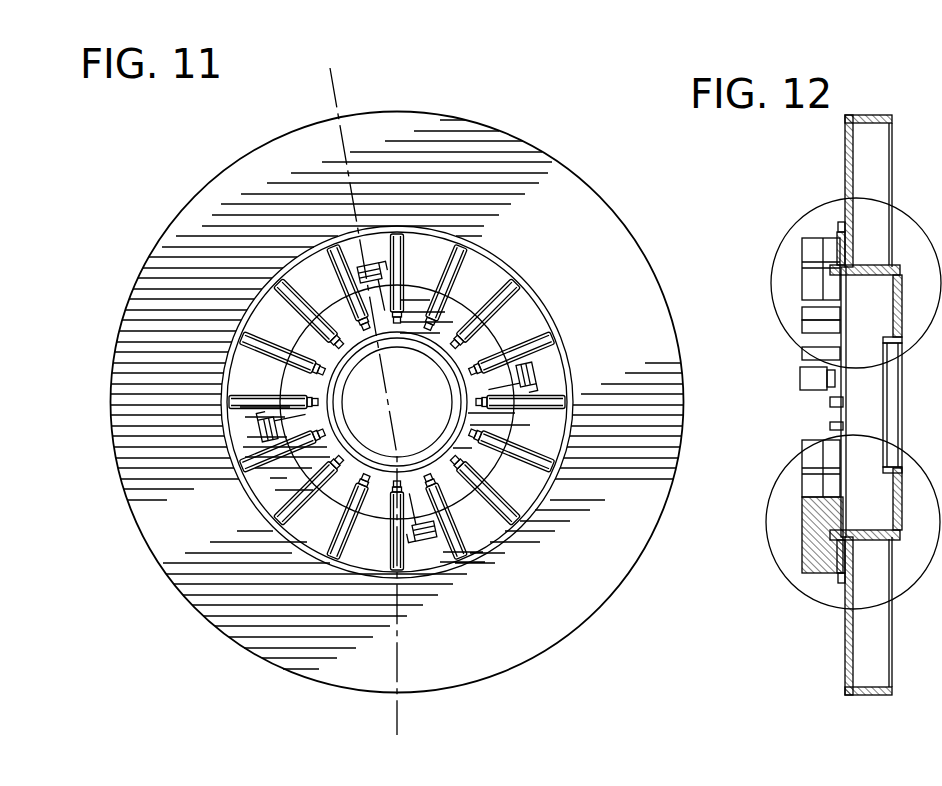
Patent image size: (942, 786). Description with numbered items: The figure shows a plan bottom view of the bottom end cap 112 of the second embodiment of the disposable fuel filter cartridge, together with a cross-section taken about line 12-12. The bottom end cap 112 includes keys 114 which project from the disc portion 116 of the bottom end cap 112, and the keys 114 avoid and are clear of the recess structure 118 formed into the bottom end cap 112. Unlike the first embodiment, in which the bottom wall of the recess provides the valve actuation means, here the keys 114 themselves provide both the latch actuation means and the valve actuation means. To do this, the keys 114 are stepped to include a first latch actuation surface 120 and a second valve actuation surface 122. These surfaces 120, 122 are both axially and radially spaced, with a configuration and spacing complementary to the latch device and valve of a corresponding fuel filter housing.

In FIG. 11, the bottom end cap 112 is at (135, 185).
In FIG. 12, the bottom end cap 112 is at (845, 165).
In FIG. 11, the keys 114 is at (527, 515).
In FIG. 12, the keys 114 is at (813, 290).
In FIG. 11, the disc portion 116 is at (372, 128).
In FIG. 11, the recess structure 118 is at (427, 382).
In FIG. 11, the first latch actuation surface 120 is at (297, 347).
In FIG. 11, the second valve actuation surface 122 is at (262, 322).
In FIG. 11, the line 12- 12 is at (330, 68).